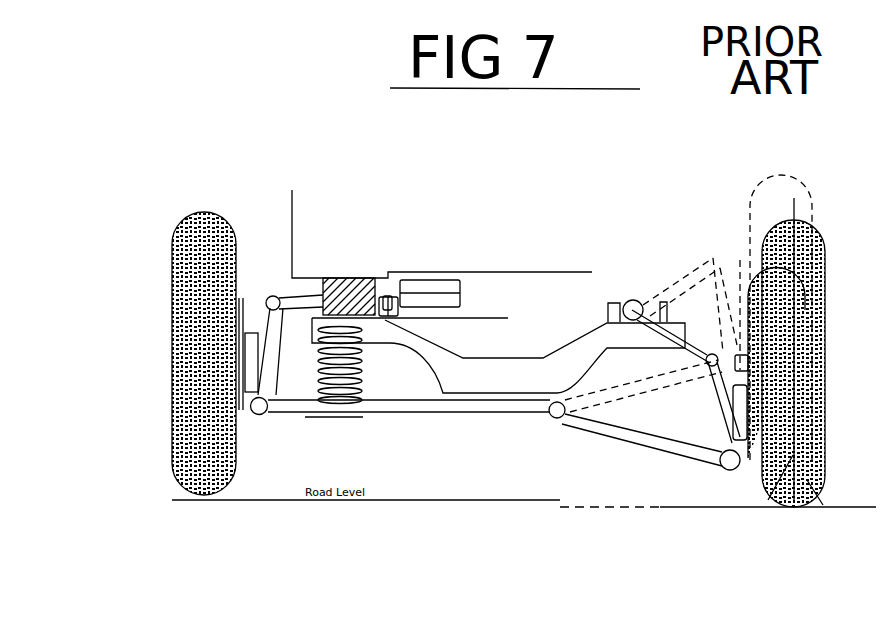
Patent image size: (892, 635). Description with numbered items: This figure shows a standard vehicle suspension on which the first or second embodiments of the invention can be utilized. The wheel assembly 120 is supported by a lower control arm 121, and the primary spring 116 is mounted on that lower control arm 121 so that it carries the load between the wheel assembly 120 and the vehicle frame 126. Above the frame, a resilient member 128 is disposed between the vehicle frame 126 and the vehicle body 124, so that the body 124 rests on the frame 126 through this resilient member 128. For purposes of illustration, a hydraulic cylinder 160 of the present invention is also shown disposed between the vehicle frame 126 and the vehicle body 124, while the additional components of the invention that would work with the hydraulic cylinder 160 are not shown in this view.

The vehicle body 124 is at (292, 212).
The resilient member 128 is at (323, 298).
The hydraulic cylinder 160 is at (418, 275).
The vehicle frame 126 is at (412, 327).
The primary spring 116 is at (362, 383).
The lower control arm 121 is at (300, 415).
The wheel assembly 120 is at (167, 437).